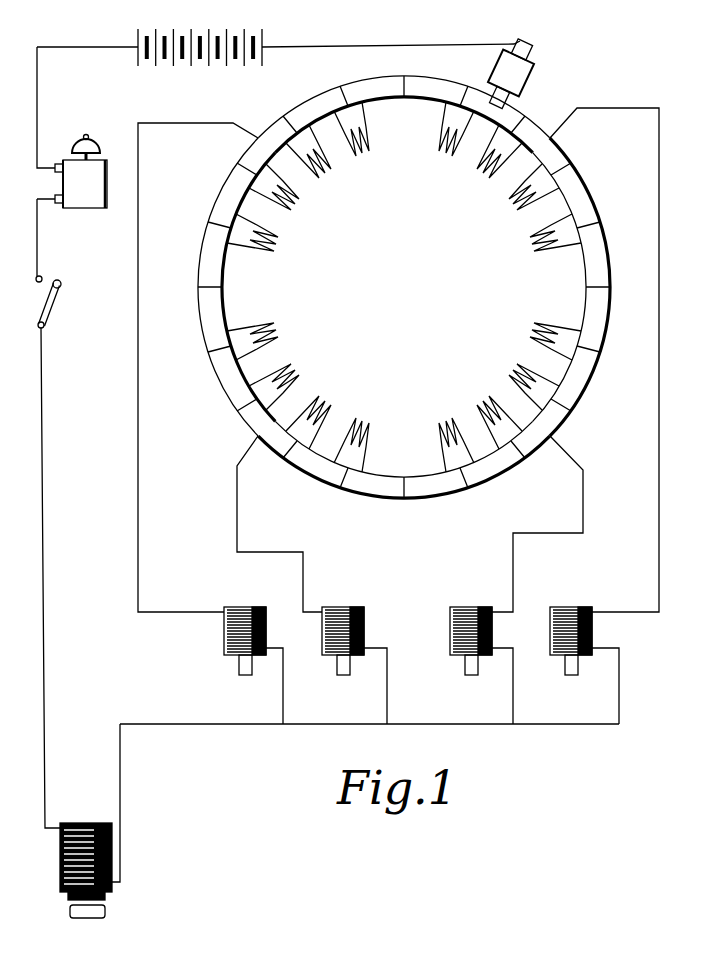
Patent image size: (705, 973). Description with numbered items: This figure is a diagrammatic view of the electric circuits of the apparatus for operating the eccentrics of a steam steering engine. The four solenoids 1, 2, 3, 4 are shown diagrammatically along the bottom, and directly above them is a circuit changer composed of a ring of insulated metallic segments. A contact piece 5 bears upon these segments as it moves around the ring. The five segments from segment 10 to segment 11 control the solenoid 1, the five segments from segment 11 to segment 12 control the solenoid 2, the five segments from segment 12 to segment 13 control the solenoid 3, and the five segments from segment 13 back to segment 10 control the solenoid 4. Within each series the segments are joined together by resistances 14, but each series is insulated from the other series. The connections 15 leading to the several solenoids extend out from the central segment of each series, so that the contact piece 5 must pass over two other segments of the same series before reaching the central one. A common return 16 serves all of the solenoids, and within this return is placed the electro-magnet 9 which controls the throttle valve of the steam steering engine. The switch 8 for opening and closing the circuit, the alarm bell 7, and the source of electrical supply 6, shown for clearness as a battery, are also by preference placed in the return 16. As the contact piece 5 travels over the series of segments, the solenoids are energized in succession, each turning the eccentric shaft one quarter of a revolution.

The solenoid 1 is at (571, 628).
The solenoid 2 is at (471, 628).
The solenoid 3 is at (343, 628).
The solenoid 4 is at (245, 628).
The contact piece 5 is at (520, 72).
The source of electrical supply 6 is at (278, 37).
The alarm bell 7 is at (72, 161).
The switch 8 is at (52, 302).
The electro-magnet 9 is at (86, 859).
The segment 10 is at (403, 114).
The segment 11 is at (571, 287).
The segment 12 is at (403, 459).
The segment 13 is at (236, 287).
The resistances 14 is at (404, 287).
The connections 15 is at (413, 360).
The common return 16 is at (330, 605).